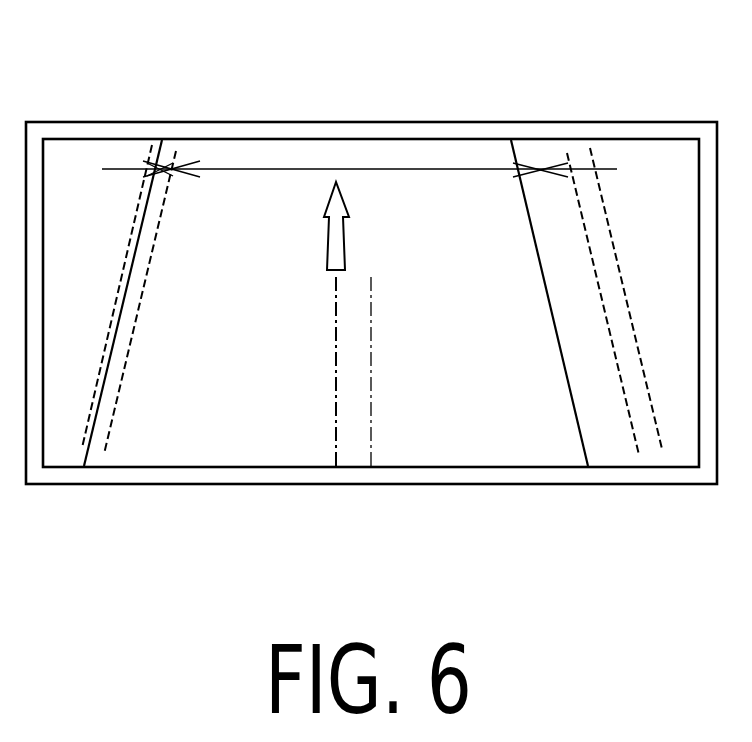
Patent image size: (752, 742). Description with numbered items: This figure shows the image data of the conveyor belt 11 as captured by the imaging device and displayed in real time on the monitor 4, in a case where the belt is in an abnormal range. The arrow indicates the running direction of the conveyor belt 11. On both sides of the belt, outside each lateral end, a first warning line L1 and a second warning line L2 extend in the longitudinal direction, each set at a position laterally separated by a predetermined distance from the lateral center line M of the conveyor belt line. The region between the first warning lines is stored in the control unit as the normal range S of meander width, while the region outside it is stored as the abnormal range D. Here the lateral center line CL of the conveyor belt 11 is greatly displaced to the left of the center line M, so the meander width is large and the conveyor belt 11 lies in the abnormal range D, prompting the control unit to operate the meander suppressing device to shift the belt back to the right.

The monitor 4 is at (655, 133).
The conveyor belt 11 is at (227, 450).
The normal range S is at (360, 169).
The abnormal range D is at (120, 168).
The first warning line L1 is at (154, 237).
The second warning line L2 is at (107, 339).
The lateral center line of the conveyor belt CL is at (335, 441).
The lateral center line of the conveyor belt line M is at (371, 395).